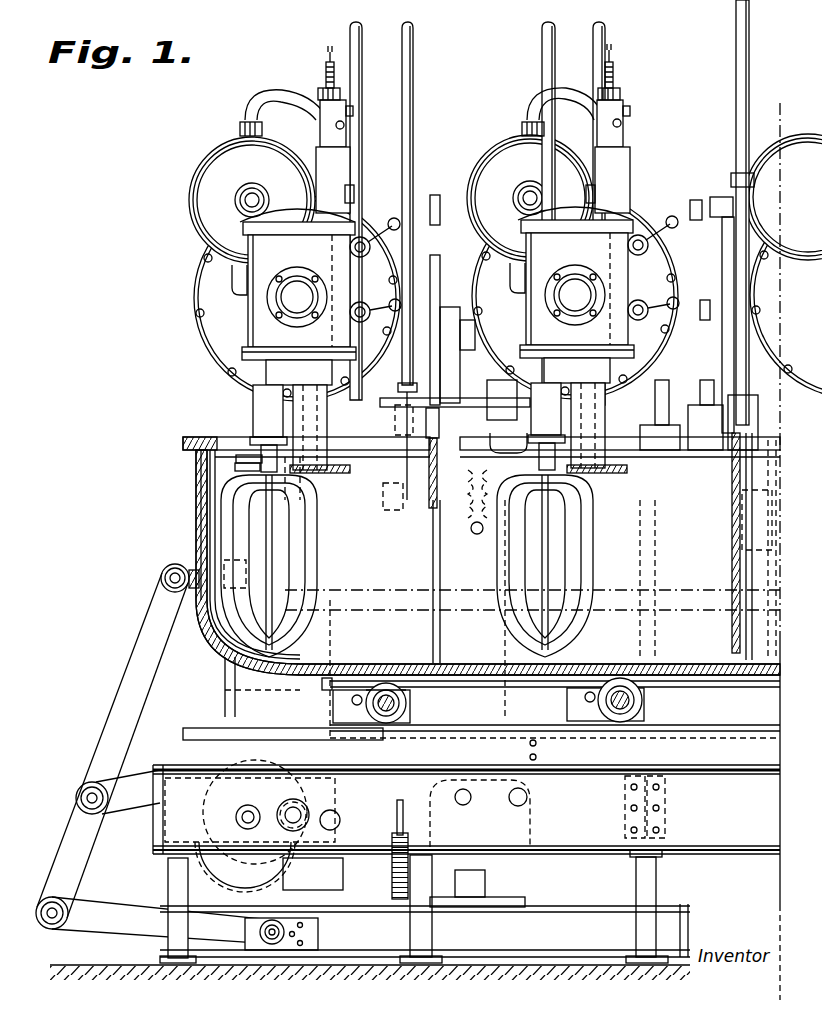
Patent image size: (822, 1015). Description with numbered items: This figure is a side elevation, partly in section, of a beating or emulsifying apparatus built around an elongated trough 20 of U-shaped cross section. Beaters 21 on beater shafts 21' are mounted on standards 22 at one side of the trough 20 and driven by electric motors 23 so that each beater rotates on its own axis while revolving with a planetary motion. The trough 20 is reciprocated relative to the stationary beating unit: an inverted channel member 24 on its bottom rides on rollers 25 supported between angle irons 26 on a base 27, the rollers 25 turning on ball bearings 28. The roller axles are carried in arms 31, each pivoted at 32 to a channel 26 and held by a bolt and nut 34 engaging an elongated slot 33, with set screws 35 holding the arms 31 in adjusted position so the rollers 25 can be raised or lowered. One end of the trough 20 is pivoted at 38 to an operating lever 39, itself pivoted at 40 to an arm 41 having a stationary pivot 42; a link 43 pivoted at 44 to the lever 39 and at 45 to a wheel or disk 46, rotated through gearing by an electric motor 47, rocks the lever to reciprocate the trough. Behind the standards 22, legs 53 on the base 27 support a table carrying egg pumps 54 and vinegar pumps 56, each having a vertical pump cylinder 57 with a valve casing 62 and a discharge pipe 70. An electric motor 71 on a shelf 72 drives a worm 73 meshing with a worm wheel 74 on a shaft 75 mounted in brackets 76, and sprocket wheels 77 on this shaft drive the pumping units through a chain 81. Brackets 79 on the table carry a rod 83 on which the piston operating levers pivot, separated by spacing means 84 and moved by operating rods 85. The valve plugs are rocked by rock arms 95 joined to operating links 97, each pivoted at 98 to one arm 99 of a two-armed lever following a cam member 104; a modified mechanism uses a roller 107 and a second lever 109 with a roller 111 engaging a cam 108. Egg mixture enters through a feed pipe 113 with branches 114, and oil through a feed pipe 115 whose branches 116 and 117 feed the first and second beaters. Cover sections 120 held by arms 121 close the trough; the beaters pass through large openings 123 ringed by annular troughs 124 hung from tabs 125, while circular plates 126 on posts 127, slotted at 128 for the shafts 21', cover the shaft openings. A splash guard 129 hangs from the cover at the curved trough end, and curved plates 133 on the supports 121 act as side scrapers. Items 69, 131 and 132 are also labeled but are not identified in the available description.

The trough 20 is at (196, 511).
The beaters 21 is at (421, 566).
The beater shafts 21' is at (417, 496).
The standards 22 is at (315, 695).
The electric motors 23 is at (202, 200).
The inverted channel member 24 is at (548, 692).
The rollers 25 is at (406, 680).
The angle irons 26 is at (740, 708).
The base 27 is at (740, 750).
The ball bearings 28 is at (384, 683).
The arms 31 is at (378, 723).
The pivot 32 is at (408, 703).
The elongated slot 33 is at (366, 723).
The bolt and nut 34 is at (350, 700).
The set screws 35 is at (398, 723).
The pivot 38 is at (161, 576).
The operating lever 39 is at (118, 676).
The pivot 40 is at (48, 929).
The arm 41 is at (92, 905).
The stationary pivot 42 is at (272, 950).
The link 43 is at (134, 810).
The pivot 44 is at (76, 800).
The pivot 45 is at (300, 805).
The wheel or disk 46 is at (248, 880).
The electric motor 47 is at (470, 880).
The legs 53 is at (262, 690).
The egg pumps 54 is at (434, 258).
The vinegar pumps 56 is at (724, 246).
The vertical pump cylinder 57 is at (432, 276).
The valve casings 62 is at (350, 320).
The pipe 69 is at (362, 94).
The discharge pipes 70 is at (402, 437).
The electric motor 71 is at (474, 585).
The shelf 72 is at (494, 612).
The worm 73 is at (476, 535).
The worm wheel 74 is at (490, 450).
The shaft 75 is at (414, 495).
The brackets 76 is at (400, 568).
The sprocket wheels 77 is at (384, 505).
The brackets 79 is at (338, 252).
The chain 81 is at (380, 474).
The rod 83 is at (436, 214).
The spacing means 84 is at (356, 195).
The operating rods 85 is at (352, 180).
The rock arm 95 is at (716, 380).
The operating link 97 is at (480, 340).
The pivot 98 is at (475, 300).
The arm 99 is at (468, 325).
The cam member 104 is at (296, 334).
The roller 107 is at (684, 290).
The cam 108 is at (690, 300).
The second lever 109 is at (705, 385).
The roller 111 is at (720, 420).
The feed pipe 113 is at (284, 420).
The branches 114 is at (283, 432).
The feed pipe 115 is at (575, 380).
The branch 116 is at (324, 478).
The branch 117 is at (515, 455).
The cover sections 120 is at (660, 448).
The arms 121 is at (320, 485).
The openings 123 is at (489, 434).
The annular troughs 124 is at (196, 462).
The tabs 125 is at (218, 437).
The circular plates 126 is at (314, 490).
The posts 127 is at (312, 500).
The slots 128 is at (260, 472).
The splash guard 129 is at (196, 482).
The spring 131 is at (438, 468).
The rod 132 is at (433, 620).
The plates 133 is at (740, 551).